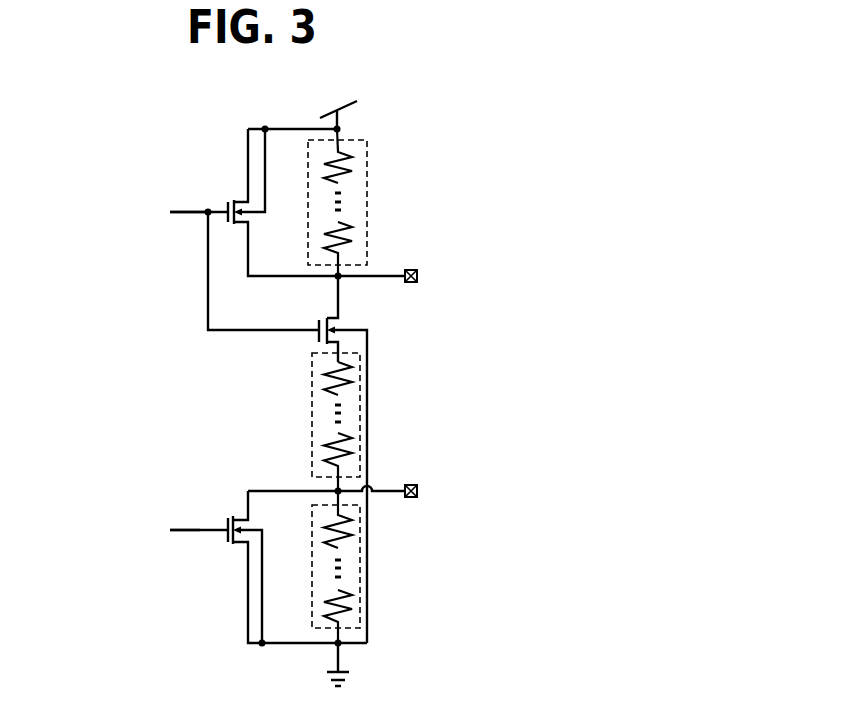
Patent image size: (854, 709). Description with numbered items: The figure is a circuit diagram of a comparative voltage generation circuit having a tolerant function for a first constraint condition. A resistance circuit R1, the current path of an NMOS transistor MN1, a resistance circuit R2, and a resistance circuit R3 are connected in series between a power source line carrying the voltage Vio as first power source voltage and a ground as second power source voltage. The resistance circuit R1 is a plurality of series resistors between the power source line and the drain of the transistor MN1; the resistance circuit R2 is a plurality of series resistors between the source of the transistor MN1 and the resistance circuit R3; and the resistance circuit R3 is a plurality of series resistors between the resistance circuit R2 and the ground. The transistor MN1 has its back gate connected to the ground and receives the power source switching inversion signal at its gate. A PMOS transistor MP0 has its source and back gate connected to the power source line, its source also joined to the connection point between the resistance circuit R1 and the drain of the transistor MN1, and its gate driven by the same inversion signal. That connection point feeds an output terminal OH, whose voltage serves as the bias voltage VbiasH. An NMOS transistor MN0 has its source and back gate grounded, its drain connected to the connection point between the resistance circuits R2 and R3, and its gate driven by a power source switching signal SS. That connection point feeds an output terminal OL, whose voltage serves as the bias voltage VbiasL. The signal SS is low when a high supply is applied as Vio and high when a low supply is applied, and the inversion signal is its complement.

The PMOS transistor MP0 is at (220, 200).
The NMOS transistor MN1 is at (313, 319).
The NMOS transistor MN0 is at (220, 519).
The resistance circuit R1 is at (367, 183).
The resistance circuit R2 is at (360, 410).
The resistance circuit R3 is at (360, 589).
The voltage Vio is at (338, 101).
The bias voltage VbiasH is at (455, 277).
The bias voltage VbiasL is at (453, 490).
The output terminal OH is at (411, 282).
The output terminal OL is at (411, 497).
The power source switching signal SS is at (161, 532).